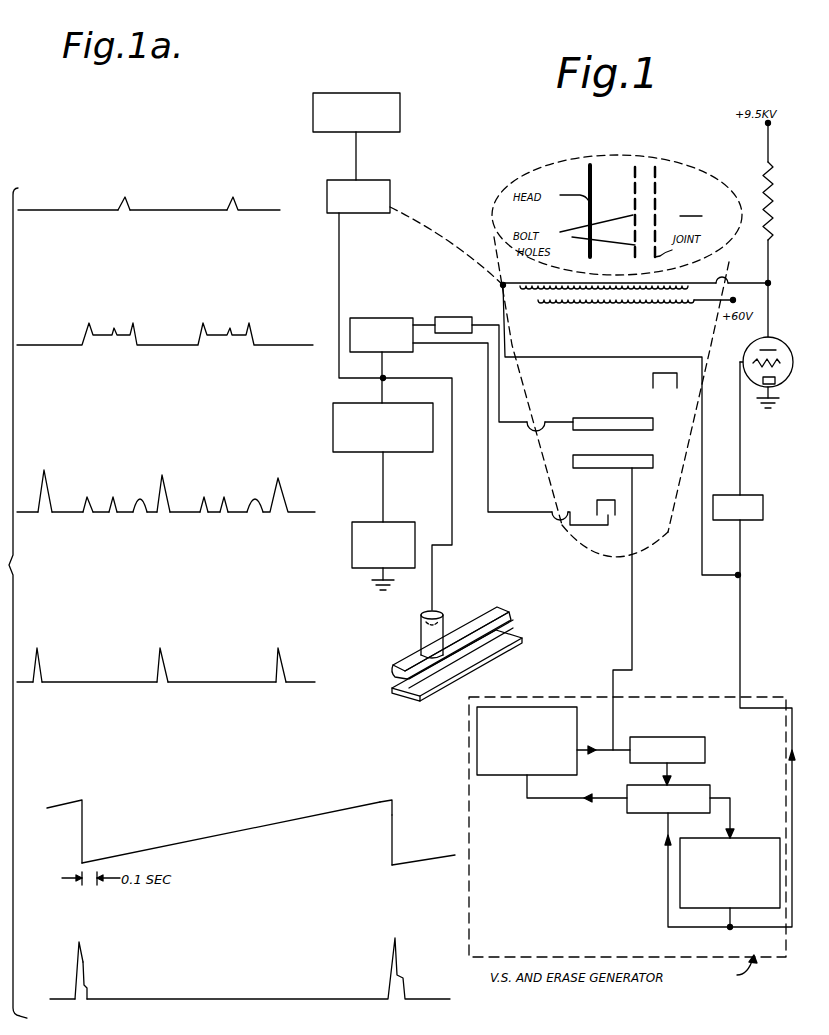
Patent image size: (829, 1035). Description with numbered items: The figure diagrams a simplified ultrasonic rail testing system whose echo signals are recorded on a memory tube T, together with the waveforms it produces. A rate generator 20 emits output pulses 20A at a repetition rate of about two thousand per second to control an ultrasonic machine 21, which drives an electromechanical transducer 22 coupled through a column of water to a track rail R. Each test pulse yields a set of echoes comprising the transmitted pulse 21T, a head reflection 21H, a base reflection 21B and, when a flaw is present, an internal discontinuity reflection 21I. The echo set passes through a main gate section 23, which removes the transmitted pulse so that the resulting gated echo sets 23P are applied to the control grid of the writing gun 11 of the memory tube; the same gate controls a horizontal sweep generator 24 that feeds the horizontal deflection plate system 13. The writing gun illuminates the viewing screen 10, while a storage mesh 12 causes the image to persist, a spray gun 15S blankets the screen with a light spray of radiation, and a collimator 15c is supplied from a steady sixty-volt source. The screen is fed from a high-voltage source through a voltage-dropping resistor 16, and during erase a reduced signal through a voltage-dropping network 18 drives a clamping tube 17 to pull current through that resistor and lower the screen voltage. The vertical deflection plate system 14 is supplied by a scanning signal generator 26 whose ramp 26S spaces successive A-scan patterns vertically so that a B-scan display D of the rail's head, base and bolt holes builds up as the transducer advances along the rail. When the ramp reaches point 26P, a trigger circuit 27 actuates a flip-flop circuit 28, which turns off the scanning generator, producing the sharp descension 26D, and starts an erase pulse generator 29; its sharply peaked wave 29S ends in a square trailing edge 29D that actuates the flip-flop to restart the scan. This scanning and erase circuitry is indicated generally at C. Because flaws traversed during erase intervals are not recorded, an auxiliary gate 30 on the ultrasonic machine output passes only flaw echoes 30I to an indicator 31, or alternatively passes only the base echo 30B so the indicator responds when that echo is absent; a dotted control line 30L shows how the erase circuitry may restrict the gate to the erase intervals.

In FIG. 1, the viewing screen 10 is at (646, 211).
In FIG. 1, the writing gun 11 is at (617, 508).
In FIG. 1, the storage mesh 12 is at (672, 292).
In FIG. 1, the horizontal deflection plate system 13 is at (603, 418).
In FIG. 1, the vertical deflection plate system 14 is at (600, 468).
In FIG. 1, the collimator 15c is at (600, 292).
In FIG. 1, the spray gun 15S is at (653, 385).
In FIG. 1, the voltage-dropping resistor 16 is at (765, 182).
In FIG. 1, the clamping tube 17 is at (743, 350).
In FIG. 1, the voltage-dropping network 18 is at (760, 513).
In FIG. 1, the rate generator 20 is at (403, 522).
In FIG. 1A, the output pulses of the rate generator 20A is at (37, 650).
In FIG. 1, the ultrasonic machine 21 is at (332, 438).
In FIG. 1A, the transmitted pulse 21T is at (44, 470).
In FIG. 1A, the head reflected signal 21H is at (87, 498).
In FIG. 1A, the internal discontinuity reflected signal 21I is at (112, 500).
In FIG. 1A, the base reflected signal 21B is at (143, 511).
In FIG. 1, the electromechanical transducer 22 is at (457, 593).
In FIG. 1, the main gate section 23 is at (369, 318).
In FIG. 1A, the periodic sets of echo signals 23P is at (103, 314).
In FIG. 1, the horizontal sweep generator 24 is at (452, 317).
In FIG. 1, the scanning signal generator 26 is at (545, 706).
In FIG. 1A, the scanning signal 26S is at (237, 832).
In FIG. 1A, the trigger point of scanning signal 26P is at (397, 784).
In FIG. 1A, the sharp descension of scanning signal 26D is at (392, 822).
In FIG. 1, the trigger circuit 27 is at (680, 737).
In FIG. 1, the flip-flop circuit 28 is at (700, 785).
In FIG. 1, the erase pulse generator 29 is at (750, 838).
In FIG. 1A, the sharply peaked erase wave 29S is at (82, 958).
In FIG. 1A, the sharp descension of erase pulse 29D is at (88, 990).
In FIG. 1, the auxiliary gate 30 is at (390, 183).
In FIG. 1A, the internal discontinuity signals passed by auxiliary gate 30I is at (128, 203).
In FIG. 1A, the base echo signal 30B is at (165, 207).
In FIG. 1, the dotted control line 30L is at (420, 214).
In FIG. 1, the indicator 31 is at (402, 120).
In FIG. 1, the memory tube T is at (558, 160).
In FIG. 1, the B-scan display D is at (664, 186).
In FIG. 1, the track rail R is at (511, 606).
In FIG. 1, the vertical scanning and erase circuitry C is at (469, 890).